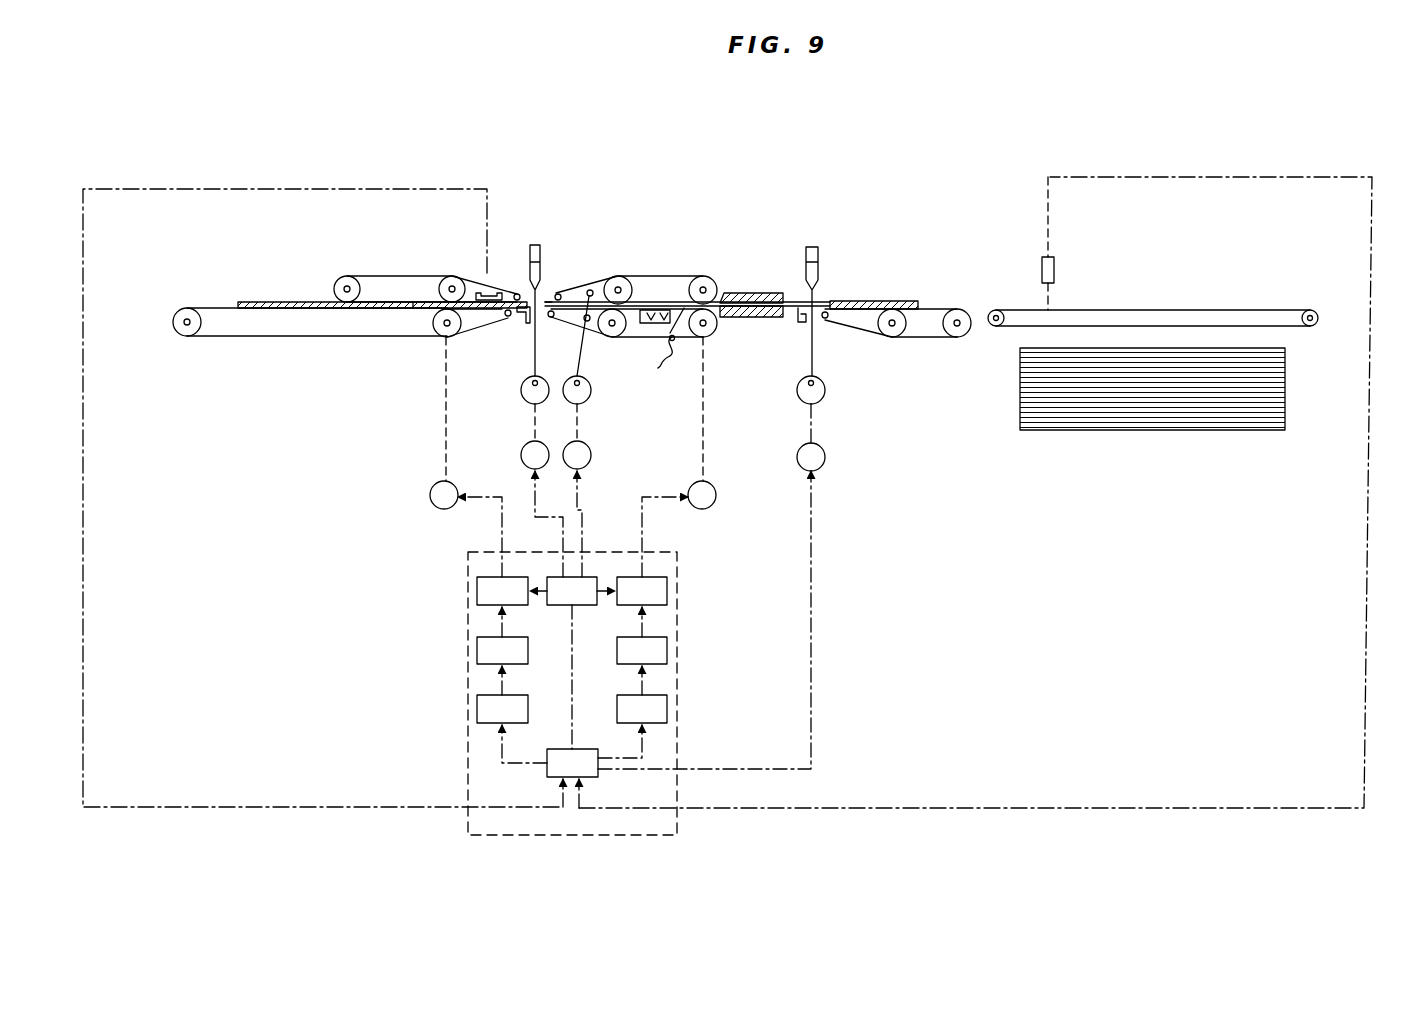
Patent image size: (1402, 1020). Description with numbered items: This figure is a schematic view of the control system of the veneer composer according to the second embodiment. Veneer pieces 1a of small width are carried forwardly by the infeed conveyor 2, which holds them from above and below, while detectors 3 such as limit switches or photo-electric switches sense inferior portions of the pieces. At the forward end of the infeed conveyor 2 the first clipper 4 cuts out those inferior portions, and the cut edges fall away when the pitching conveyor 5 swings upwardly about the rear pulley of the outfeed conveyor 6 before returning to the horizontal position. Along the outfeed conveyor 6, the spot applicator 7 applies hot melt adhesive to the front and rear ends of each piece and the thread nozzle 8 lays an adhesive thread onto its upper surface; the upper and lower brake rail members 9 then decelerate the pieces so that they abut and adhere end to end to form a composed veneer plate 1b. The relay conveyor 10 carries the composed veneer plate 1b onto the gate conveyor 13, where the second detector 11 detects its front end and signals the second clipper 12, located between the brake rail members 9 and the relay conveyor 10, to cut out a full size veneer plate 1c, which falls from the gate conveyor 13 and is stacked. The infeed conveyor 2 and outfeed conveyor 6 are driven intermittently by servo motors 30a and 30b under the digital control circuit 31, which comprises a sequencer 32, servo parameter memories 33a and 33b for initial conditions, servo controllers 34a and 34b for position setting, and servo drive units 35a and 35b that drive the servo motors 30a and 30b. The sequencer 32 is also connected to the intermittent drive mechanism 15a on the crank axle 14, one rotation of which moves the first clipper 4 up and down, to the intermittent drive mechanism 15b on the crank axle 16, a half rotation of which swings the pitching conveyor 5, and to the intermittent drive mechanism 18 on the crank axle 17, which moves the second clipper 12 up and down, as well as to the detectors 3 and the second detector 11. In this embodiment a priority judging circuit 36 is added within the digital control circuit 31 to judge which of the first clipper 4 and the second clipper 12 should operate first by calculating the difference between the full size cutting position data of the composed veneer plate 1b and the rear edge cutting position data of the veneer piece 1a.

The veneer piece 1a is at (275, 302).
The composed veneer plate 1b is at (880, 301).
The full size veneer plate 1c is at (1153, 418).
The infeed conveyor 2 is at (445, 327).
The detector 3 is at (490, 292).
The first clipper 4 is at (540, 245).
The pitching conveyor 5 is at (613, 277).
The outfeed conveyor 6 is at (715, 328).
The spot applicator 7 is at (653, 310).
The thread nozzle 8 is at (682, 306).
The brake rail member 9 is at (757, 293).
The relay conveyor 10 is at (948, 309).
The second detector 11 is at (1054, 270).
The second clipper 12 is at (812, 247).
The gate conveyor 13 is at (1195, 310).
The crank axle 14 is at (521, 388).
The intermittent drive mechanism 15a is at (527, 447).
The intermittent drive mechanism 15b is at (591, 448).
The crank axle 16 is at (591, 389).
The crank axle 17 is at (825, 393).
The intermittent drive mechanism 18 is at (825, 462).
The servo motor 30a is at (432, 497).
The servo motor 30b is at (717, 500).
The digital control circuit 31 is at (677, 787).
The sequencer 32 is at (587, 778).
The servo parameter memory 33a is at (477, 707).
The servo parameter memory 33b is at (667, 709).
The servo controller 34a is at (477, 648).
The servo controller 34b is at (667, 650).
The servo drive unit 35a is at (477, 588).
The servo drive unit 35b is at (667, 590).
The priority judging circuit 36 is at (593, 577).